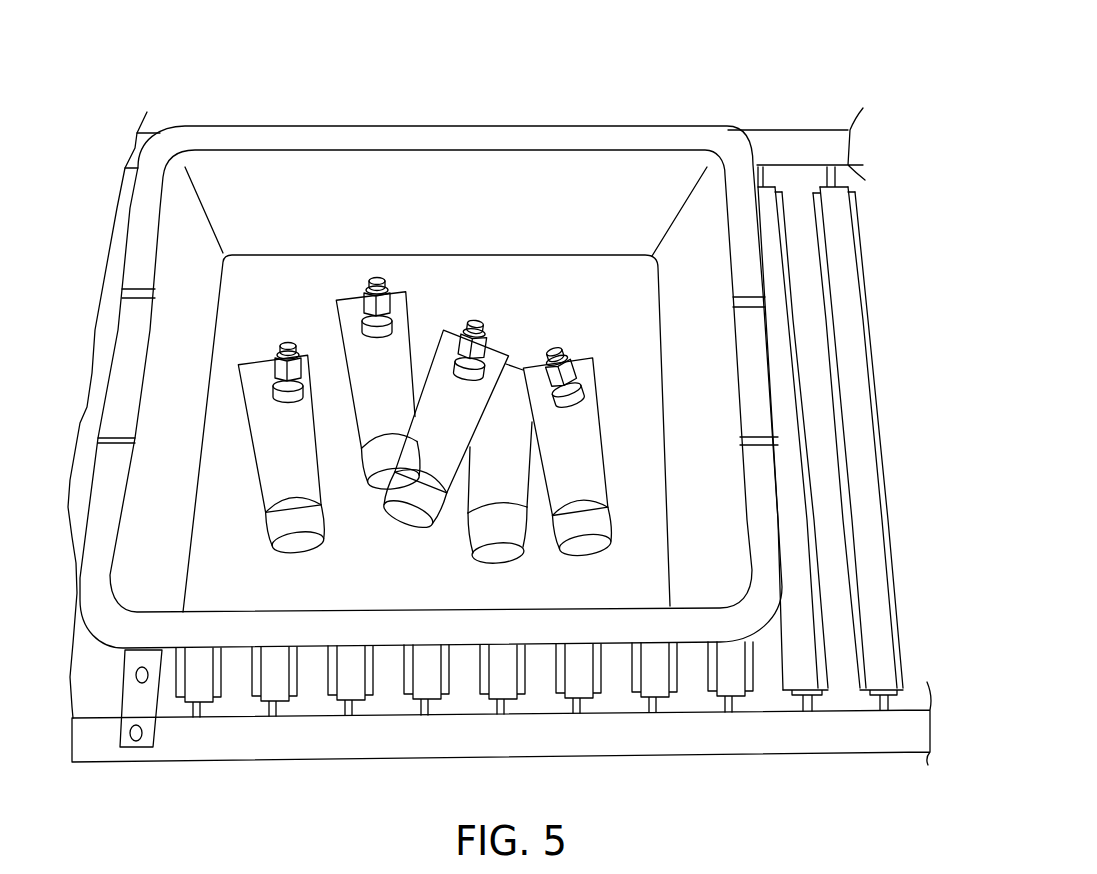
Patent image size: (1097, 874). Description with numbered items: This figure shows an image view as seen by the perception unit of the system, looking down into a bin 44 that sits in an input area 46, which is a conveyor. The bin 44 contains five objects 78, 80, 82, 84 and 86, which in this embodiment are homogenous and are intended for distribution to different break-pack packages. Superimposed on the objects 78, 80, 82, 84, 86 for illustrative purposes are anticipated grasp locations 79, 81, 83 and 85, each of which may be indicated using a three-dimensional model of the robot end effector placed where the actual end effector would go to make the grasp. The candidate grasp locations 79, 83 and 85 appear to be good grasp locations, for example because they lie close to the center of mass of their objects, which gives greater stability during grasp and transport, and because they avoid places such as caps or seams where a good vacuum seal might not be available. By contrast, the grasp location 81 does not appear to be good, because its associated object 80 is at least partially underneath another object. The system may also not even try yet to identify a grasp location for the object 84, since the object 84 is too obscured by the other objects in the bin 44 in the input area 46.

The bin 44 is at (482, 124).
The input area 46 is at (747, 68).
The object 78 is at (282, 533).
The grasp location 79 is at (286, 340).
The object 80 is at (366, 458).
The grasp location 81 is at (375, 275).
The object 82 is at (435, 513).
The grasp location 83 is at (472, 318).
The object 84 is at (522, 533).
The grasp location 85 is at (549, 347).
The object 86 is at (604, 527).